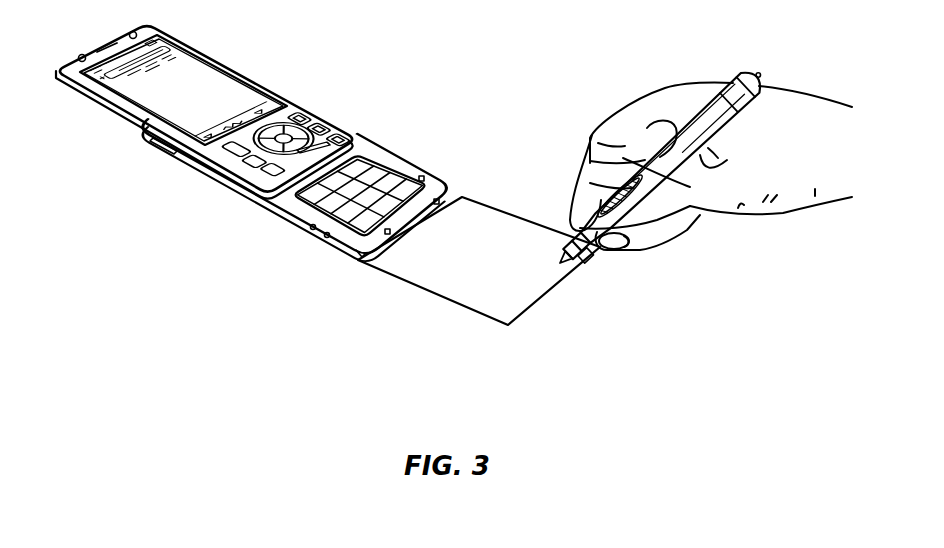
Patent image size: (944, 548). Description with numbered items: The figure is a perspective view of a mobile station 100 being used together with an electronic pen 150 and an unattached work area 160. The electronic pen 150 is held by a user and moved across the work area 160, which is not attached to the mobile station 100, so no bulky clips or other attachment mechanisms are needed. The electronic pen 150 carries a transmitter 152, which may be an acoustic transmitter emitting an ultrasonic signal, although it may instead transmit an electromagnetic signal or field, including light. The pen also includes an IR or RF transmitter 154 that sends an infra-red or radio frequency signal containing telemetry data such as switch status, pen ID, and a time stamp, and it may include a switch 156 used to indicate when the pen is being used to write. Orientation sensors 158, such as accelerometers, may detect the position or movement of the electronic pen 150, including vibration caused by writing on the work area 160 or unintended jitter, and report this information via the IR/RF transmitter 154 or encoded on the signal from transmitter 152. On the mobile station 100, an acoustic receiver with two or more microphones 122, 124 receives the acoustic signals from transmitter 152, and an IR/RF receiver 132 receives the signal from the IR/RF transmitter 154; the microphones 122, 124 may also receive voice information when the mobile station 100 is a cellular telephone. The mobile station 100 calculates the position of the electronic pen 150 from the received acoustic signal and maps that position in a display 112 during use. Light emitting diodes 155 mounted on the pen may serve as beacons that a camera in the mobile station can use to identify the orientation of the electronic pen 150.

The mobile station 100 is at (284, 158).
The display 112 is at (187, 63).
The microphone 122 is at (358, 255).
The microphone 124 is at (438, 200).
The IR/RF receiver 132 is at (422, 178).
The electronic pen 150 is at (634, 176).
The transmitter 152 is at (589, 265).
The IR or RF transmitter 154 is at (563, 233).
The light emitting diodes 155 is at (756, 73).
The switch 156 is at (689, 208).
The orientation sensors 158 is at (606, 251).
The work area 160 is at (447, 300).